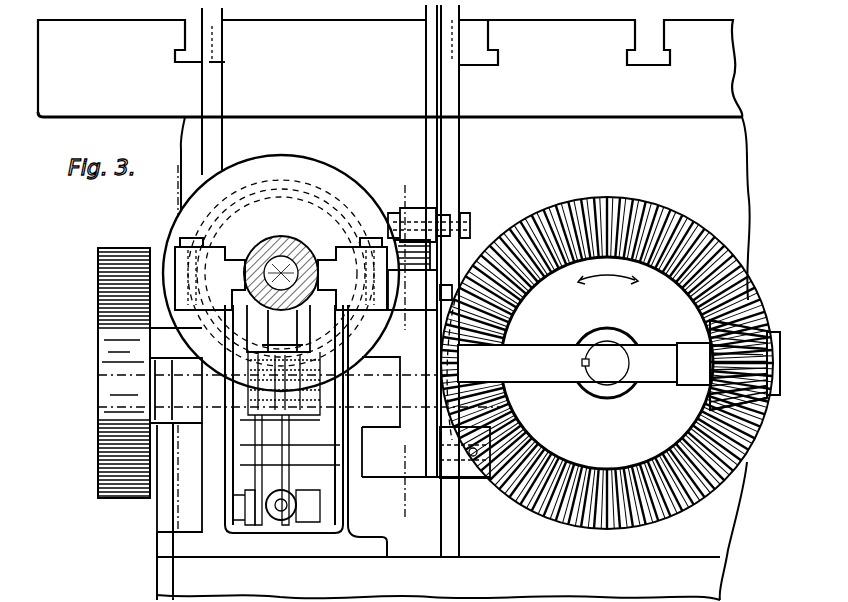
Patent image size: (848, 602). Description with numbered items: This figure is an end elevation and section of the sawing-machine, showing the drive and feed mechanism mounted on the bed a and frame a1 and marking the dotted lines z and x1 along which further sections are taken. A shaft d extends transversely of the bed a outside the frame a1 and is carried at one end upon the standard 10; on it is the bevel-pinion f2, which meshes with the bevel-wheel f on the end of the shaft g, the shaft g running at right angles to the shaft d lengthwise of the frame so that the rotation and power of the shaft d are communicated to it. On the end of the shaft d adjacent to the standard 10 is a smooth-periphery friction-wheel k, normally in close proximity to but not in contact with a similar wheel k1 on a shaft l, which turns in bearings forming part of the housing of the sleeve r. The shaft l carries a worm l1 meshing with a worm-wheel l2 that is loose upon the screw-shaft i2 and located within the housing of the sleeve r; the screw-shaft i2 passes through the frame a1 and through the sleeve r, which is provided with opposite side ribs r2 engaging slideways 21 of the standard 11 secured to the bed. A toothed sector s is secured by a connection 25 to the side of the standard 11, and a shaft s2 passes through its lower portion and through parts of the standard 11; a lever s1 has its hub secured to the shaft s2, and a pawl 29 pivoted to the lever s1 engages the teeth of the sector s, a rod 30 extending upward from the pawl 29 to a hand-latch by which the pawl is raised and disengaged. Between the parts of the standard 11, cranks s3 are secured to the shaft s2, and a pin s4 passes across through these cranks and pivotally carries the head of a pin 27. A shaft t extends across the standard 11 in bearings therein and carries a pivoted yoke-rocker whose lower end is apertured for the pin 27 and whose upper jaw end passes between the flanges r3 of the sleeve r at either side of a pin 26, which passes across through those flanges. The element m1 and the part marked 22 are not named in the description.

The bed a is at (438, 511).
The frame a1 is at (394, 310).
The rod m1 is at (212, 148).
The dotted section line x' x' x1 is at (176, 343).
The rod 30 is at (428, 145).
The lever s1 is at (452, 158).
The dotted section line z z is at (401, 351).
The pawl 29 is at (412, 225).
The toothed sector s is at (420, 290).
The connection 25 is at (432, 300).
The sleeve r is at (302, 157).
The worm-wheel l2 is at (318, 187).
The side ribs r2 is at (281, 278).
The slideways 21 is at (205, 245).
The flanges r3 is at (233, 262).
The screw-shaft i2 is at (296, 260).
The key 22 is at (280, 238).
The friction-wheel k is at (96, 264).
The friction-wheel k1 is at (102, 345).
The shaft l is at (108, 378).
The standard 11 is at (362, 345).
The pin 26 is at (262, 335).
The worm l1 is at (258, 422).
The shaft t is at (330, 405).
The pin 27 is at (280, 510).
The shaft s2 is at (215, 474).
The cranks s3 is at (248, 475).
The pin s4 is at (325, 508).
The standard 10 is at (160, 508).
The bevel-wheel f is at (627, 202).
The shaft g is at (598, 335).
The shaft d is at (550, 348).
The bevel-pinion f2 is at (705, 392).